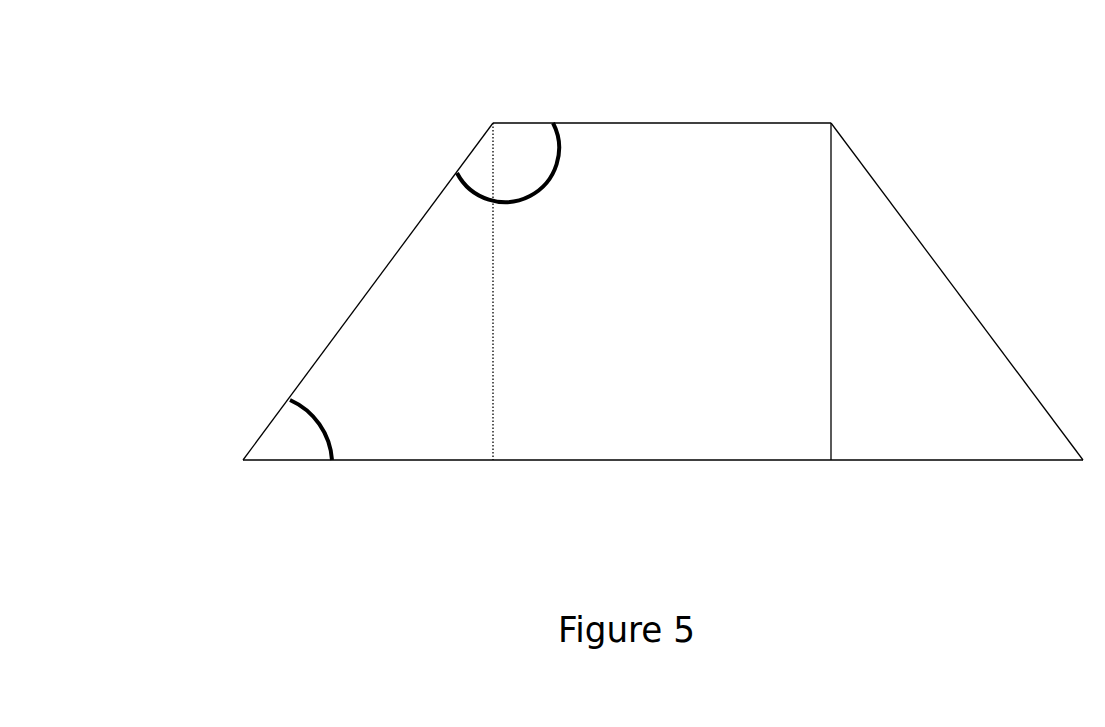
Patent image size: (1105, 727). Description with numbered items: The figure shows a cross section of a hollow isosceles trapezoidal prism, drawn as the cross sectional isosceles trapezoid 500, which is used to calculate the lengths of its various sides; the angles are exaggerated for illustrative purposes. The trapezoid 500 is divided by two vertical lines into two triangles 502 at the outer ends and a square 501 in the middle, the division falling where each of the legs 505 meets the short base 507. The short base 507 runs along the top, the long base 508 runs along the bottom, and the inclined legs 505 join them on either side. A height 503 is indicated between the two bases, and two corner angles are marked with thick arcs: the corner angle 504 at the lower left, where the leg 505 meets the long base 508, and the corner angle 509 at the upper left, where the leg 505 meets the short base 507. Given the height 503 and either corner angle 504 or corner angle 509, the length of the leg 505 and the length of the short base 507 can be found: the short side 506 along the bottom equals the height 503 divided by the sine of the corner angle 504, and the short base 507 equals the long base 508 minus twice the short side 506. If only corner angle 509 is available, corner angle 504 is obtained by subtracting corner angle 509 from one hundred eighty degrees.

The cross sectional isosceles trapezoid 500 is at (783, 124).
The square 501 is at (803, 248).
The triangles 502 is at (462, 248).
The height 503 is at (497, 340).
The corner angle 504 is at (298, 443).
The leg 505 is at (382, 273).
The short side 506 is at (387, 465).
The short base 507 is at (657, 123).
The long base 508 is at (653, 465).
The corner angle 509 is at (500, 146).